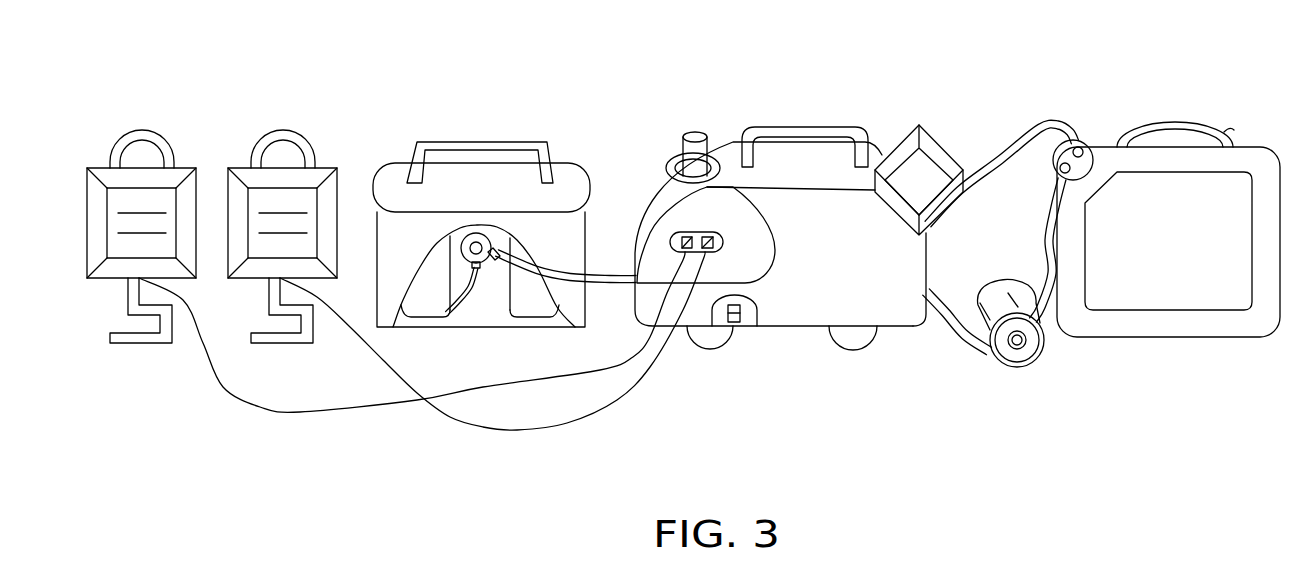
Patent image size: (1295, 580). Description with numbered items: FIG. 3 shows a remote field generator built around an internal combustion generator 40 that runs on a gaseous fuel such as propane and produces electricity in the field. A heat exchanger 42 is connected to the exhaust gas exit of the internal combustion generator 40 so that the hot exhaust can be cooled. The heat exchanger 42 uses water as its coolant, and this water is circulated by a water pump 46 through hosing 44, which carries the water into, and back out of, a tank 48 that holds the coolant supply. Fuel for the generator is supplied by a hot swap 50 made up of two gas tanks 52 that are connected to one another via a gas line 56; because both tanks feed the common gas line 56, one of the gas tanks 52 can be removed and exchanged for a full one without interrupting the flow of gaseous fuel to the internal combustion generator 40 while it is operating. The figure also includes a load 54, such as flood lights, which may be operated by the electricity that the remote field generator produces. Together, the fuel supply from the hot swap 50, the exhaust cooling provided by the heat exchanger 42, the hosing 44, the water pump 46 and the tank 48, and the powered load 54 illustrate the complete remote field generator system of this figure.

The internal combustion generator 40 is at (809, 103).
The heat exchanger 42 is at (938, 142).
The hosing 44 is at (1060, 122).
The water pump 46 is at (1010, 370).
The tank 48 is at (1173, 251).
The hot swap 50 is at (503, 141).
The gas tanks 52 is at (523, 317).
The load 54 is at (287, 126).
The gas line 56 is at (607, 270).